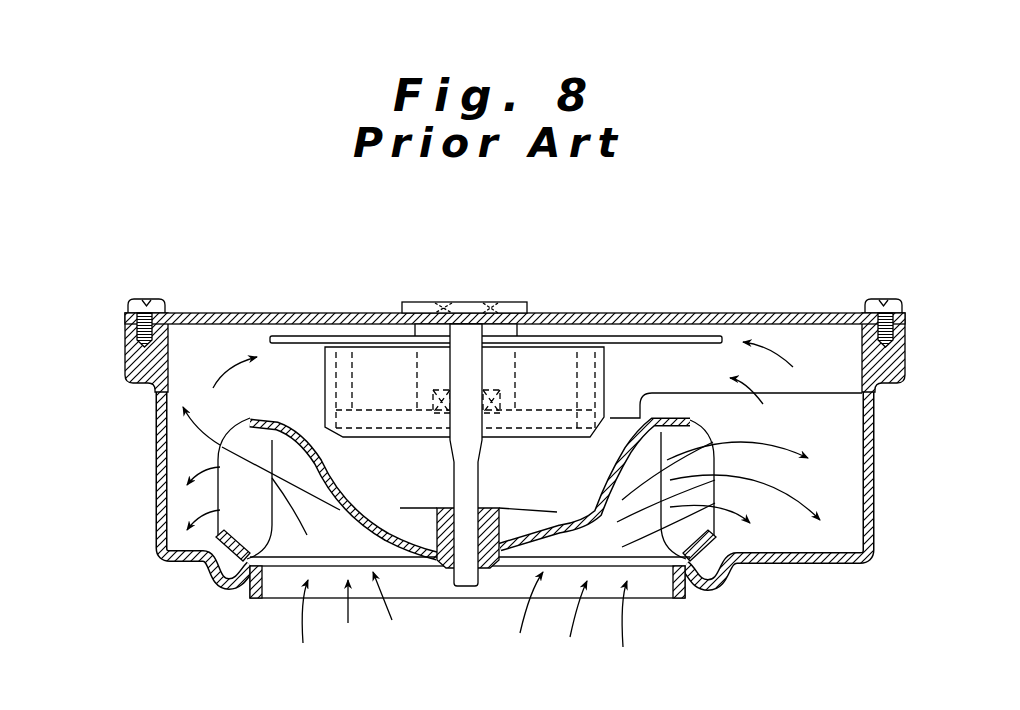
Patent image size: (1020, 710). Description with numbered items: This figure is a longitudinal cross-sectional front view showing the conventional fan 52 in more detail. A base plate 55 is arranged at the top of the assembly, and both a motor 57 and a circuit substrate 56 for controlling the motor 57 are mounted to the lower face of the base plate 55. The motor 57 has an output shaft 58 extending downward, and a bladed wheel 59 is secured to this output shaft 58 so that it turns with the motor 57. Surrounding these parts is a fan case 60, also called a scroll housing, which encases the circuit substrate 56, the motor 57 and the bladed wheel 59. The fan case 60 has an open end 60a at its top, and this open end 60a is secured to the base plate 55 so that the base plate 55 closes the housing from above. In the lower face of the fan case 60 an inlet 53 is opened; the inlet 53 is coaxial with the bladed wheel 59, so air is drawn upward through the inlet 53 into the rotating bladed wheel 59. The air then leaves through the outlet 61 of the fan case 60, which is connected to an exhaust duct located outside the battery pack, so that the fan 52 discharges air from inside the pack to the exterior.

The fan 52 is at (127, 445).
The inlet 53 is at (648, 592).
The base plate 55 is at (275, 322).
The circuit substrate 56 is at (652, 336).
The motor 57 is at (542, 370).
The output shaft 58 is at (464, 588).
The bladed wheel 59 is at (395, 540).
The fan case 60 is at (160, 478).
The open end 60a is at (172, 338).
The outlet 61 is at (823, 470).